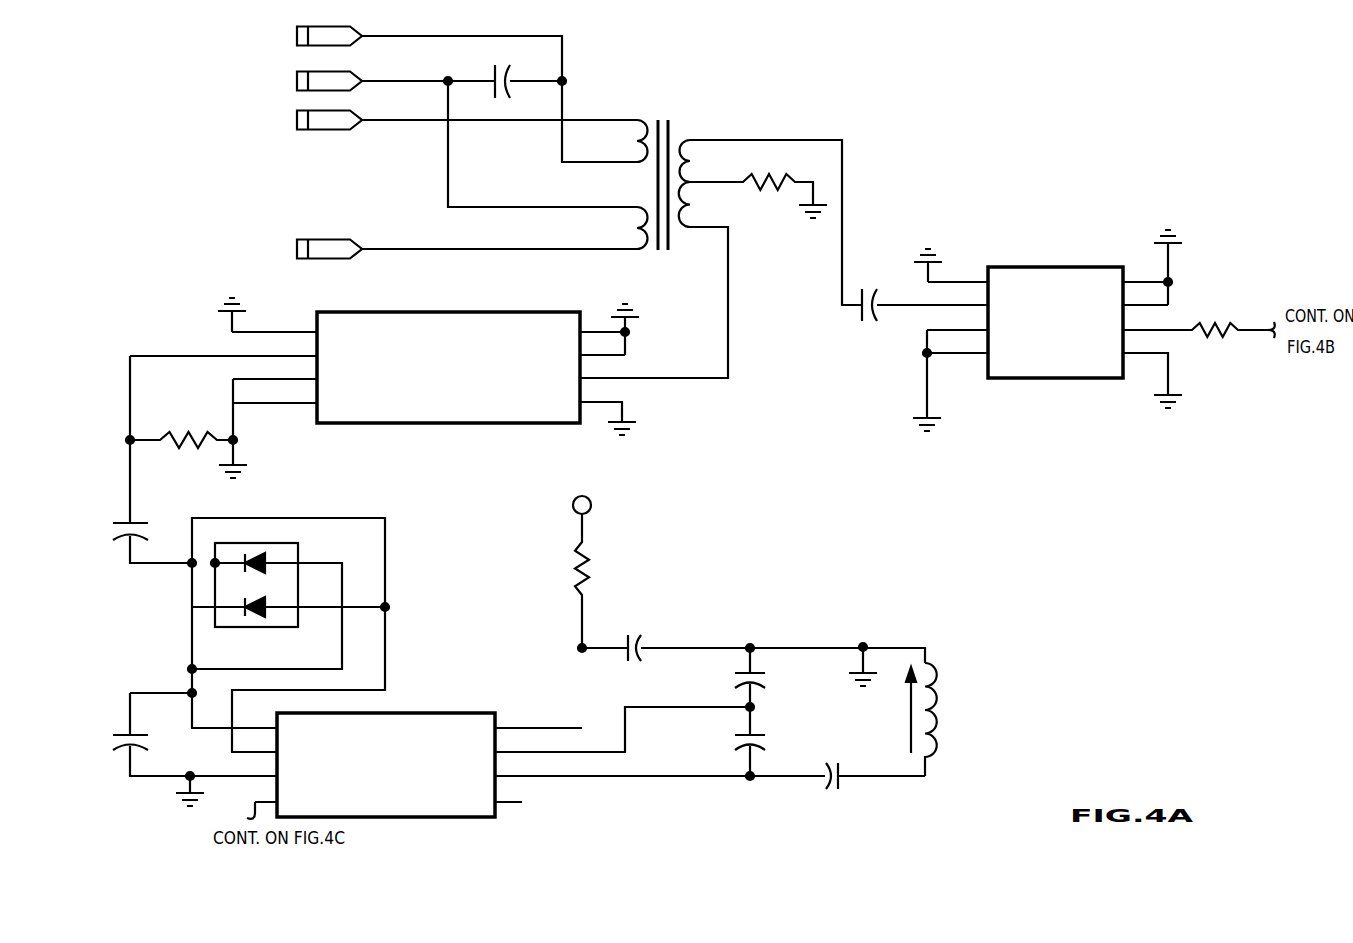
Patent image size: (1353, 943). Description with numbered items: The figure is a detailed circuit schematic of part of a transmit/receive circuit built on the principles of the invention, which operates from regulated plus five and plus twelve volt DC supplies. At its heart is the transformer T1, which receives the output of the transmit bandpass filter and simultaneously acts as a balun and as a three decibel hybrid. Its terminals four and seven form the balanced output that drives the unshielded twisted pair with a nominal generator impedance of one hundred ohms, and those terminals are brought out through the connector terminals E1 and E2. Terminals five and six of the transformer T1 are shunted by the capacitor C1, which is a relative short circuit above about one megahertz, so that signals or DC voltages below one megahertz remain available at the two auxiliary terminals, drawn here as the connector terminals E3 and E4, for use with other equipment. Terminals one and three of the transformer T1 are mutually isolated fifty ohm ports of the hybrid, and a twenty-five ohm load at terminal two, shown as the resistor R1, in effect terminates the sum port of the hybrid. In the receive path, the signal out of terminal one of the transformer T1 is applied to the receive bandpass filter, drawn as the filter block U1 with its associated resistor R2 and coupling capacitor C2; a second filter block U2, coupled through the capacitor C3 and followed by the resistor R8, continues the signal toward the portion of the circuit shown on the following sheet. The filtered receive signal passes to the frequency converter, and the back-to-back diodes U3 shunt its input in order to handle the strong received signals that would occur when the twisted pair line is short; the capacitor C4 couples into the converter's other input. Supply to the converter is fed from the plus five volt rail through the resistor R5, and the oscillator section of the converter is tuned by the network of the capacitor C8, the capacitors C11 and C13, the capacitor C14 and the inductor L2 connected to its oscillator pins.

The AUX1 connector terminal E3 is at (306, 36).
The AUX2 connector terminal E4 is at (306, 81).
The L1 connector terminal E1 is at (313, 120).
The L2 connector terminal E2 is at (313, 249).
The capacitor C1 is at (505, 75).
The transformer T1 is at (662, 170).
The resistor R1 is at (758, 182).
The capacitor C3 is at (925, 292).
The bandpass filter IC U2 is at (1047, 330).
The resistor R8 is at (1199, 312).
The bandpass filter BPFS/BPF2 U1 is at (384, 383).
The resistor R2 is at (186, 428).
The capacitor C2 is at (144, 459).
The back-to-back diodes U3 is at (477, 668).
The capacitor C4 is at (186, 749).
The resistor R5 is at (595, 561).
The capacitor C8 is at (666, 642).
The capacitor C11 is at (773, 679).
The capacitor C13 is at (726, 743).
The capacitor C14 is at (837, 769).
The inductor L2 is at (937, 719).